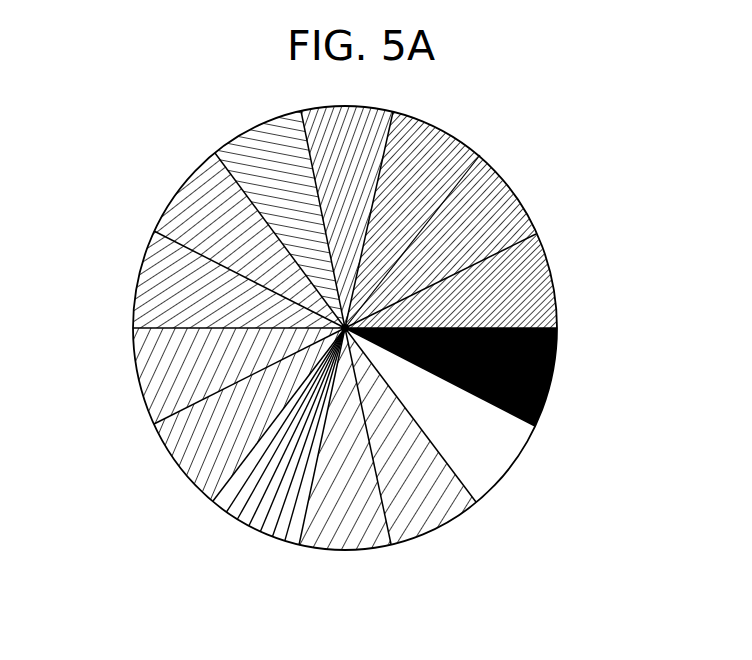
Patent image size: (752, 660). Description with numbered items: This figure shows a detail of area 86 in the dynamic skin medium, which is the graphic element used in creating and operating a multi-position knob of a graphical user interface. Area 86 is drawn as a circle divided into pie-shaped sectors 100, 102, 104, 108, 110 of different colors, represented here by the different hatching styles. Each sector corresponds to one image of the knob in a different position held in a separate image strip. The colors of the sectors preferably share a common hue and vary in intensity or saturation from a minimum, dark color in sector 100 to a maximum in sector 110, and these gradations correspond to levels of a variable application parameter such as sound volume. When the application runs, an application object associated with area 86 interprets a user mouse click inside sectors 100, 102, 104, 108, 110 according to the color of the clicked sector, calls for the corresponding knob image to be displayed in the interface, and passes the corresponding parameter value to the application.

The area 86 is at (130, 111).
The sector 100 is at (551, 378).
The sector 102 is at (552, 267).
The sector 104 is at (508, 182).
The sector 108 is at (430, 532).
The sector 110 is at (510, 467).